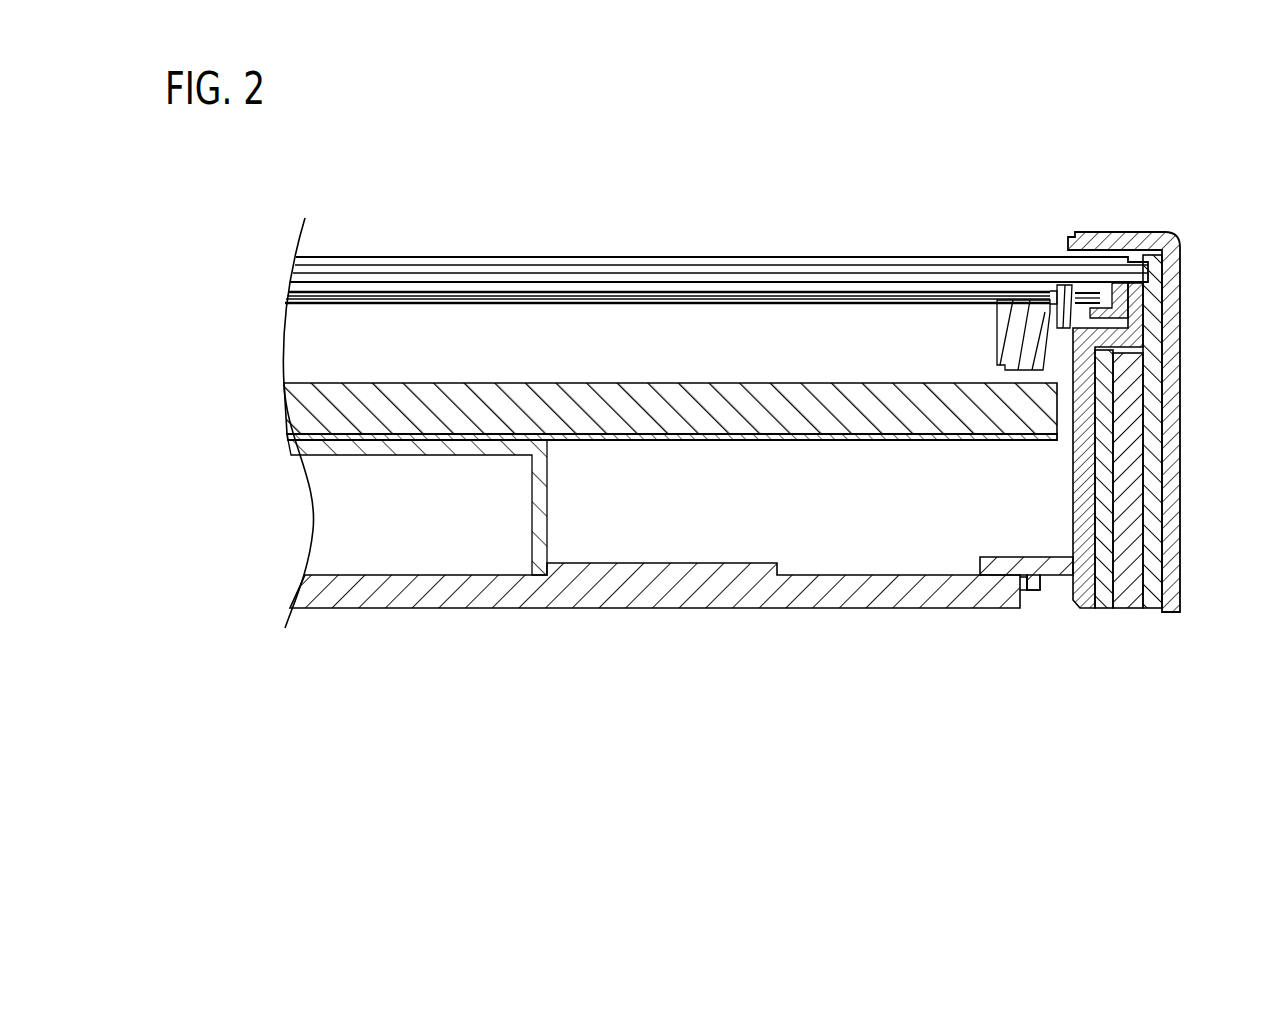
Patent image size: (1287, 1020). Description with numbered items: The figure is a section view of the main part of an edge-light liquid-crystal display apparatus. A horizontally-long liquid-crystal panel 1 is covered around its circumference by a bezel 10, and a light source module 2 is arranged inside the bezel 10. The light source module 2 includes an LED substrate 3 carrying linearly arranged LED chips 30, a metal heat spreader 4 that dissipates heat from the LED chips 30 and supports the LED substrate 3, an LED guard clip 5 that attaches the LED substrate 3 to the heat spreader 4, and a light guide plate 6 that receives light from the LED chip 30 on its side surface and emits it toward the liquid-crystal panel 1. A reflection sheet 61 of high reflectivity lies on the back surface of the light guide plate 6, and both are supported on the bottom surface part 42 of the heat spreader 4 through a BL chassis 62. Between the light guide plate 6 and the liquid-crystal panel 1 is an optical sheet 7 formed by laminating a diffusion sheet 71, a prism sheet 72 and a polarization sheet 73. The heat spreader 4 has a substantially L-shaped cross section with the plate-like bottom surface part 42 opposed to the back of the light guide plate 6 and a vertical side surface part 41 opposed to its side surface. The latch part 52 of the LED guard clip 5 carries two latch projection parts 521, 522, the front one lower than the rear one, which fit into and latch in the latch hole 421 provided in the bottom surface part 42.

The liquid-crystal panel 1 is at (715, 268).
The light source module 2 is at (1150, 425).
The LED substrate 3 is at (1106, 510).
The heat spreader 4 is at (658, 648).
The LED guard clip 5 is at (1120, 502).
The light guide plate 6 is at (665, 425).
The optical sheet 7 is at (692, 221).
The bezel 10 is at (1160, 238).
The LED chip 30 is at (1088, 435).
The side surface part 41 is at (1128, 470).
The bottom surface part 42 is at (920, 608).
The latch part 52 is at (1069, 639).
The reflection sheet 61 is at (640, 438).
The BL chassis 62 is at (540, 525).
The diffusion sheet 71 is at (667, 259).
The prism sheet 72 is at (452, 302).
The polarization sheet 73 is at (448, 302).
The latch hole 421 is at (1022, 608).
The latch projection part 521 is at (1035, 600).
The latch projection part 522 is at (1095, 608).